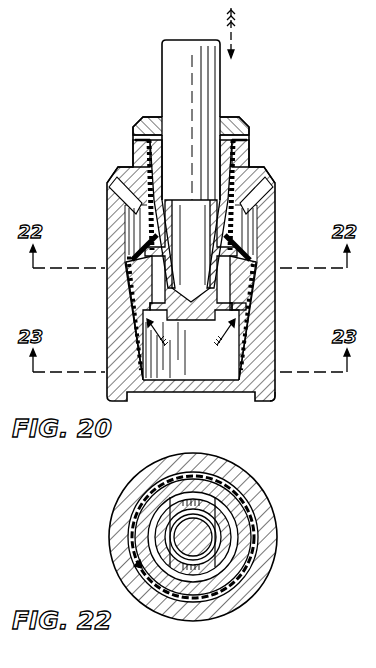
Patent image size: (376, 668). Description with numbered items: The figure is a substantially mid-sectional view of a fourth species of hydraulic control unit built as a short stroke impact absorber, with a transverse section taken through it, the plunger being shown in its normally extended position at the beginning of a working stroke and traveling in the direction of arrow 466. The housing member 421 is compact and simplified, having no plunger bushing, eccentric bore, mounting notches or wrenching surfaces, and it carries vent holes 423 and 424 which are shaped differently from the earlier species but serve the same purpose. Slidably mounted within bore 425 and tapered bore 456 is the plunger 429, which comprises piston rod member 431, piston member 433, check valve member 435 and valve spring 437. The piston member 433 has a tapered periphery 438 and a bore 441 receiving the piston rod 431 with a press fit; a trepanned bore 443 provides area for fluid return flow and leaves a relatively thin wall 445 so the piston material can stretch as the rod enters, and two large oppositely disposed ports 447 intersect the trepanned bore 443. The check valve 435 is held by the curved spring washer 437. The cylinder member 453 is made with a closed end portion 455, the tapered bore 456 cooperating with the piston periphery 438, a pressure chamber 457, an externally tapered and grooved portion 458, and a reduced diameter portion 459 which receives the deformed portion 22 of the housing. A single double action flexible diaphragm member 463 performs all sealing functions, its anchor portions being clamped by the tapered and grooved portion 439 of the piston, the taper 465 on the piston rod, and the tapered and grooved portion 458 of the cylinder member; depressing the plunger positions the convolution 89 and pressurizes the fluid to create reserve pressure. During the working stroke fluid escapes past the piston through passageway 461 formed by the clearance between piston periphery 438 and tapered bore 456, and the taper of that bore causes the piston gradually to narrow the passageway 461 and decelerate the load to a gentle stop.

In FIG. 20, the arrow 466 is at (234, 42).
In FIG. 20, the plunger 429 is at (226, 93).
In FIG. 20, the piston rod member 431 is at (208, 108).
In FIG. 20, the housing member 421 is at (138, 110).
In FIG. 20, the bore 425 is at (240, 135).
In FIG. 20, the convolution 89 is at (133, 122).
In FIG. 20, the vent hole 423 is at (135, 141).
In FIG. 20, the vent hole 424 is at (115, 176).
In FIG. 20, the taper 465 is at (130, 194).
In FIG. 20, the tapered and grooved portion 439 is at (240, 214).
In FIG. 20, the double action flexible diaphragm member 463 is at (158, 215).
In FIG. 22, the double action flexible diaphragm member 463 is at (130, 542).
In FIG. 20, the ports 447 is at (150, 238).
In FIG. 20, the piston member 433 is at (238, 240).
In FIG. 20, the tapered periphery 438 is at (250, 262).
In FIG. 20, the bore 441 is at (165, 262).
In FIG. 20, the cylinder member 453 is at (125, 357).
In FIG. 20, the valve spring 437 is at (255, 358).
In FIG. 20, the trepanned bore 443 is at (140, 318).
In FIG. 22, the trepanned bore 443 is at (160, 531).
In FIG. 20, the check valve member 435 is at (236, 292).
In FIG. 20, the thin wall 445 is at (133, 298).
In FIG. 22, the thin wall 445 is at (176, 520).
In FIG. 20, the passageway 461 is at (127, 305).
In FIG. 22, the passageway 461 is at (235, 497).
In FIG. 20, the externally tapered and grooved portion 458 is at (250, 336).
In FIG. 20, the tapered bore 456 is at (238, 318).
In FIG. 20, the closed end portion 455 is at (160, 395).
In FIG. 20, the pressure chamber 457 is at (120, 392).
In FIG. 20, the reduced diameter portion 459 is at (258, 396).
In FIG. 20, the deformed portion 22 is at (273, 401).